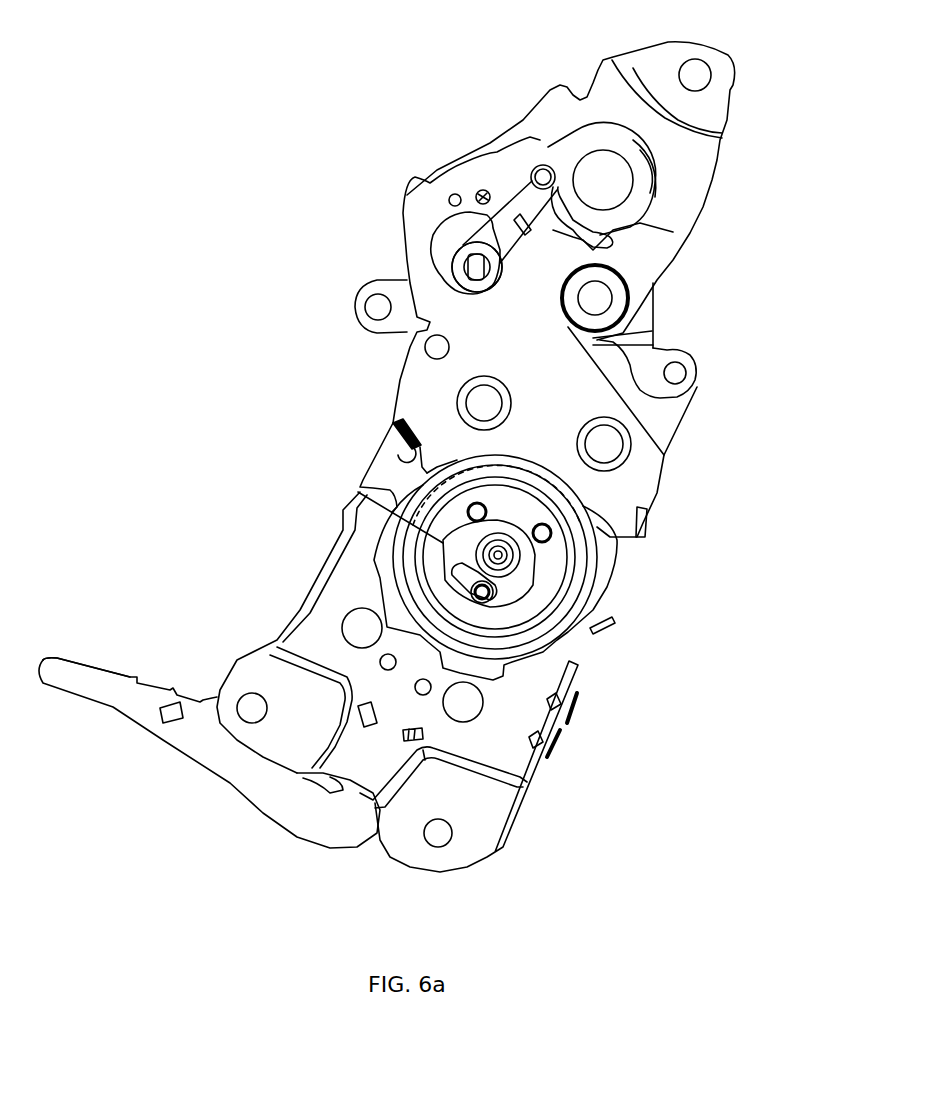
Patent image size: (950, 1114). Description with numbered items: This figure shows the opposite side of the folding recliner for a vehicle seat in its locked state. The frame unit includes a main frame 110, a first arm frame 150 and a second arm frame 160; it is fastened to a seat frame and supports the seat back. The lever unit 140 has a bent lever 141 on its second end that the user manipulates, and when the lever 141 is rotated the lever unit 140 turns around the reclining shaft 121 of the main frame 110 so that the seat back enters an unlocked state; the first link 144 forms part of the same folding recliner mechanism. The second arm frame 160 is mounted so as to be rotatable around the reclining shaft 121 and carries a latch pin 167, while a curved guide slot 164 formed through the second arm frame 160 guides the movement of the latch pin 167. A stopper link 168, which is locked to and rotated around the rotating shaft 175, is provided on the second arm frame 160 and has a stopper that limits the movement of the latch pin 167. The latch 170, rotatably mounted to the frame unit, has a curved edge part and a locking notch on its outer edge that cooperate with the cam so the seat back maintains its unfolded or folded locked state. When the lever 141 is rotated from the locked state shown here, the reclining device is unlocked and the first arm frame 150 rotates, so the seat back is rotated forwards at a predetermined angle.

The main frame 110 is at (316, 562).
The reclining shaft 121 is at (502, 555).
The lever unit 140 is at (234, 798).
The lever 141 is at (57, 668).
The first link 144 is at (383, 455).
The first arm frame 150 is at (712, 388).
The second arm frame 160 is at (583, 366).
The guide slot 164 is at (600, 235).
The latch pin 167 is at (543, 165).
The stopper link 168 is at (531, 175).
The latch 170 is at (730, 162).
The rotating shaft 175 is at (477, 267).